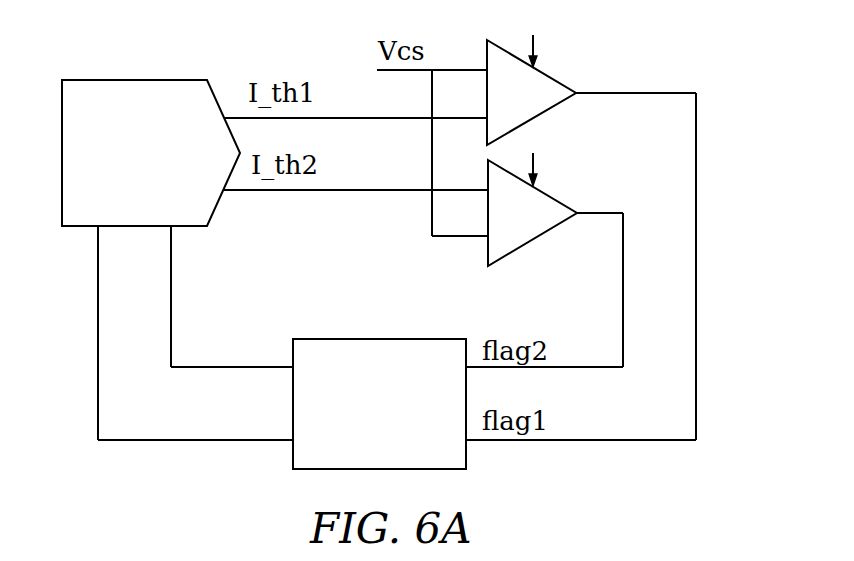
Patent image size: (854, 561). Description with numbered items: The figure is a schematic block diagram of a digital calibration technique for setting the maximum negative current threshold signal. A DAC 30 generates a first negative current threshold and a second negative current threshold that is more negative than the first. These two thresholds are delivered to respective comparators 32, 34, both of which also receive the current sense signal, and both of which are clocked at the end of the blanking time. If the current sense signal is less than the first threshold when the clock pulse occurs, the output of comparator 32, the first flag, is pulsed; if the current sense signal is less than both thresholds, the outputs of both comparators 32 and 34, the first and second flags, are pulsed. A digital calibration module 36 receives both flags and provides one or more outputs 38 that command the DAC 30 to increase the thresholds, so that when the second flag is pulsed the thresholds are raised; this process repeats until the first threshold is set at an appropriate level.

The DAC 30 is at (134, 80).
The comparator 32 is at (535, 122).
The comparator 34 is at (535, 240).
The digital calibration module 36 is at (382, 339).
The outputs 38 is at (170, 297).